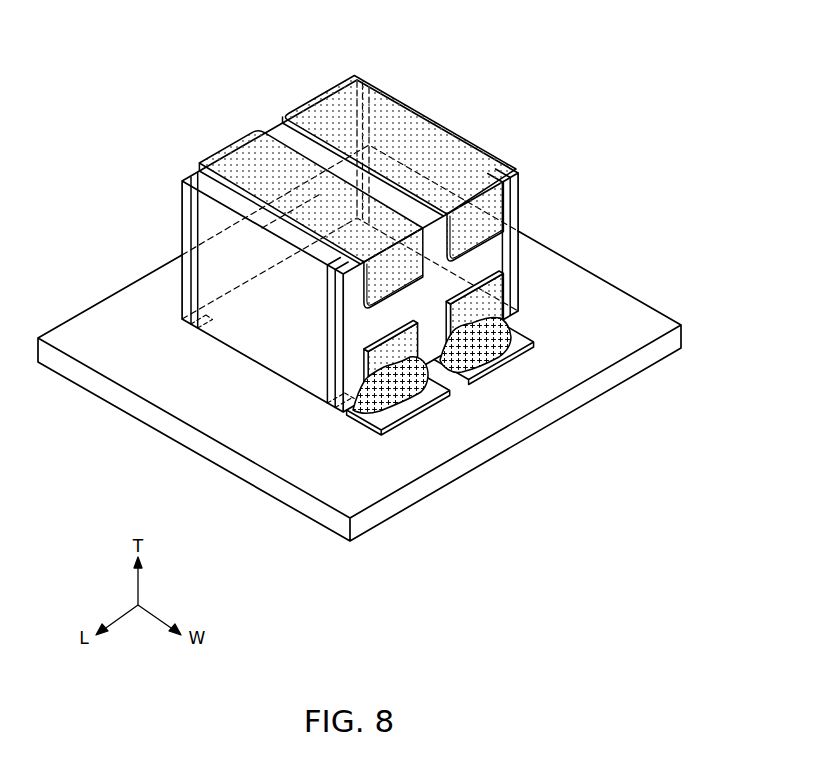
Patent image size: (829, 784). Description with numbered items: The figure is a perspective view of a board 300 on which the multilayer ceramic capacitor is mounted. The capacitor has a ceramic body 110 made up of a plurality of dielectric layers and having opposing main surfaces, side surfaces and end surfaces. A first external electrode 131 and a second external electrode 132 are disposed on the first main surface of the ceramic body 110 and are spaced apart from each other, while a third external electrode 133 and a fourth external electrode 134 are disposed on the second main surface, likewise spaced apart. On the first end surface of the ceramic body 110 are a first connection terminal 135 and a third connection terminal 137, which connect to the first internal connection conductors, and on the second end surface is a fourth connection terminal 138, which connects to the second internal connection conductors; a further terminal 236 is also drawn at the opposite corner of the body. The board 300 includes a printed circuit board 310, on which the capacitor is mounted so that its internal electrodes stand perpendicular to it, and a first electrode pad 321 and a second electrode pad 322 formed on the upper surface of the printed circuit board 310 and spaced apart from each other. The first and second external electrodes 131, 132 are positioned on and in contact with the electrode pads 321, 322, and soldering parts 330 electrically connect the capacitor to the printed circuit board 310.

The ceramic body 110 is at (415, 124).
The first external electrode 131 is at (382, 368).
The second external electrode 132 is at (508, 321).
The third external electrode 133 is at (232, 152).
The fourth external electrode 134 is at (317, 106).
The first connection terminal 135 is at (330, 345).
The third connection terminal 137 is at (190, 218).
The fourth connection terminal 138 is at (357, 82).
The insulating layer side portion 236 is at (494, 163).
The board having the multilayer ceramic capacitor 300 is at (359, 305).
The printed circuit board 310 is at (127, 363).
The first electrode pad 321 is at (413, 390).
The second electrode pad 322 is at (478, 362).
The soldering parts 330 is at (488, 315).